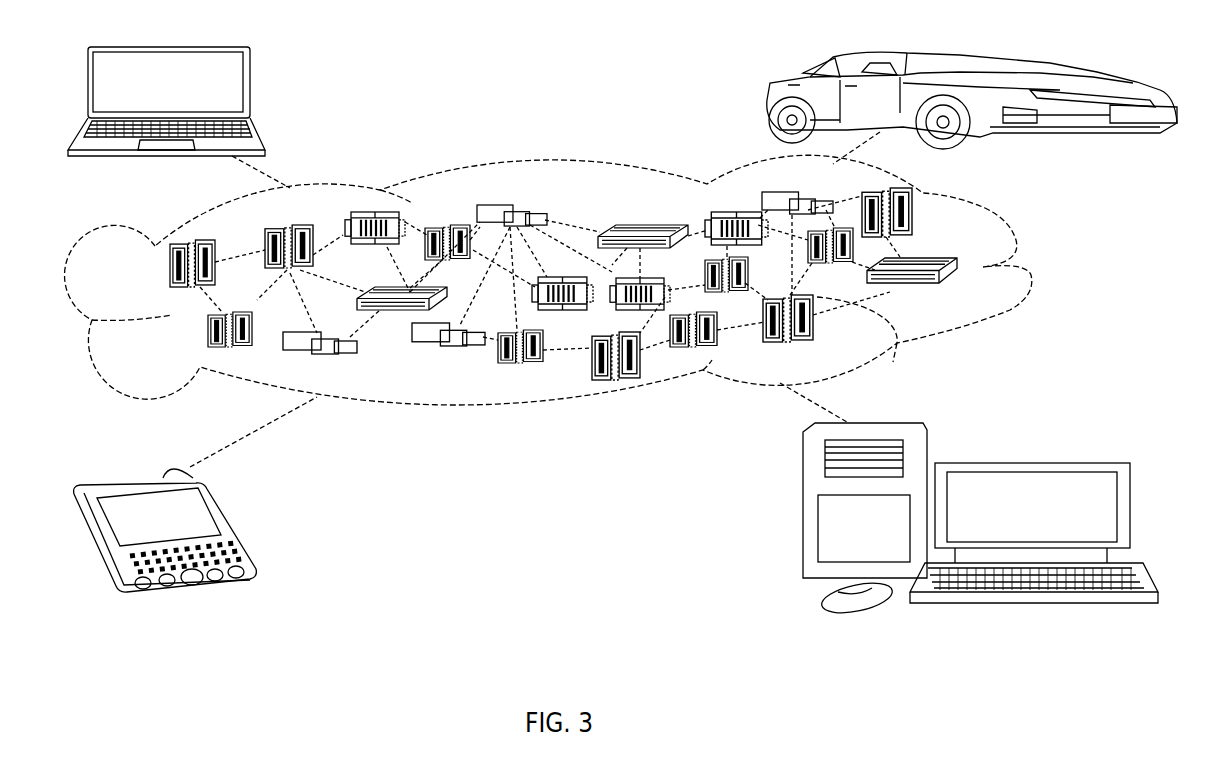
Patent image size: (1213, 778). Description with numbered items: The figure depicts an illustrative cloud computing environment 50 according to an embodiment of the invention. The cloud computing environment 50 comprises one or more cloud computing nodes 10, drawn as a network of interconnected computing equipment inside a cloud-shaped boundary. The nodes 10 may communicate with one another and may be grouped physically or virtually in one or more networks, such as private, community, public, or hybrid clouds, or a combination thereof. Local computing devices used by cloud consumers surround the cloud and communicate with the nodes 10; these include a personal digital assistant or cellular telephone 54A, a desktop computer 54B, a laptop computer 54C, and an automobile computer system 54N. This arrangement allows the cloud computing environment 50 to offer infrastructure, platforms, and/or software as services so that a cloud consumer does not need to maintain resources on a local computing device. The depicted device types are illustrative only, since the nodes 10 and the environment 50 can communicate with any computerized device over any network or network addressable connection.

The cloud computing node 10 is at (958, 290).
The cloud computing environment 50 is at (1033, 270).
The personal digital assistant or cellular telephone 54A is at (238, 522).
The desktop computer 54B is at (1040, 449).
The laptop computer 54C is at (250, 88).
The automobile computer system 54N is at (768, 97).